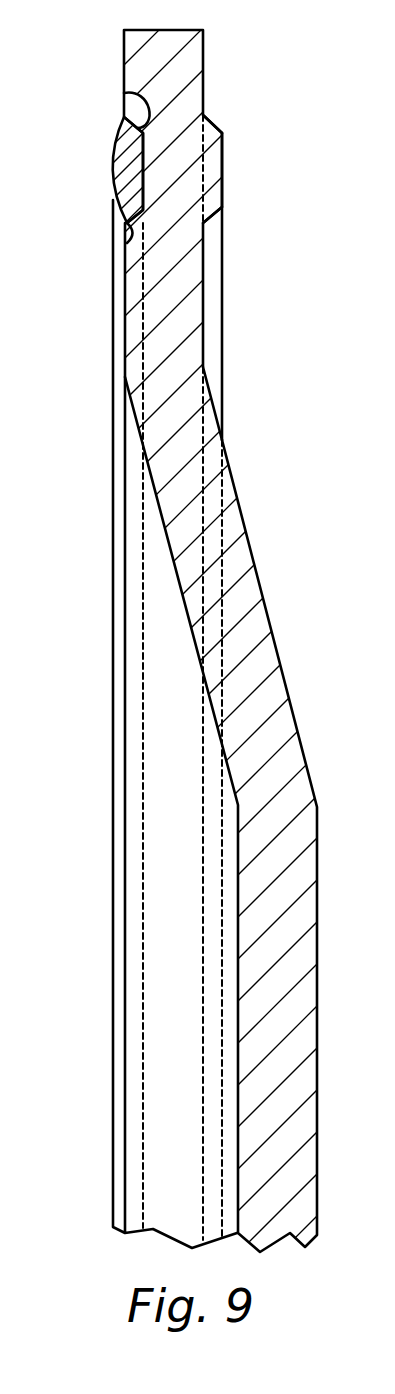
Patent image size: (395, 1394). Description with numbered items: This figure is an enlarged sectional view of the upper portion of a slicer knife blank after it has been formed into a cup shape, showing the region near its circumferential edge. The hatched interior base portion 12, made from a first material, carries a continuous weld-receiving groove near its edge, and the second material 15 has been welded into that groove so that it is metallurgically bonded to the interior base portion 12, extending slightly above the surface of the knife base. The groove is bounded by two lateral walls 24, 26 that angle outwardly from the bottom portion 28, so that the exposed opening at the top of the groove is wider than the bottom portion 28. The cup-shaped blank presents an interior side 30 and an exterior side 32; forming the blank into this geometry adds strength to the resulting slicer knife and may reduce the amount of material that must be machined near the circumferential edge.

The interior base portion 12 is at (305, 958).
The second material 15 is at (113, 160).
The lateral wall 24 is at (124, 93).
The lateral wall 26 is at (130, 232).
The bottom portion 28 is at (143, 181).
The interior side 30 is at (237, 892).
The exterior side 32 is at (243, 518).